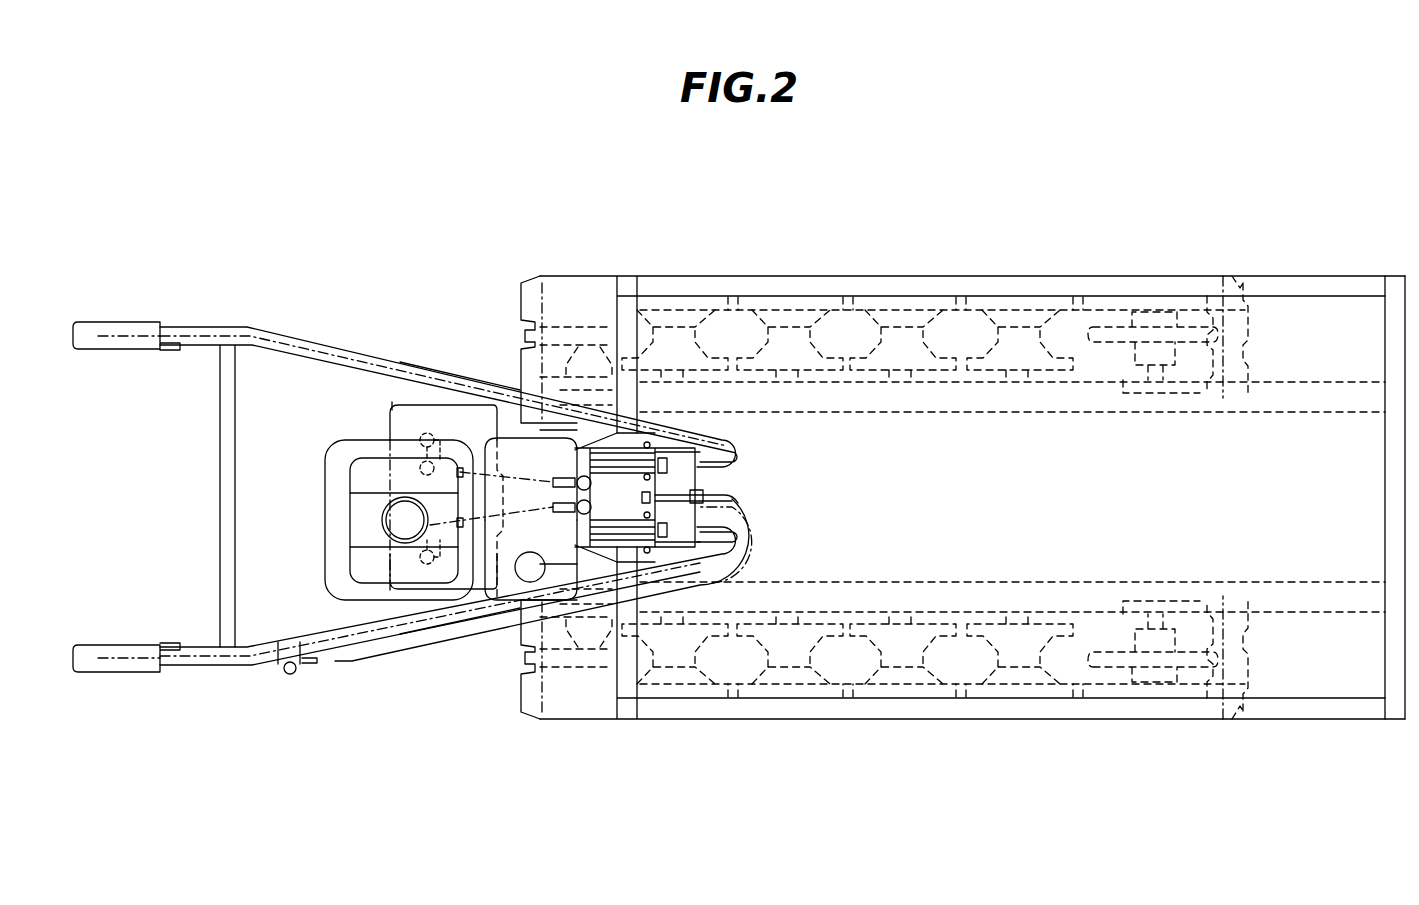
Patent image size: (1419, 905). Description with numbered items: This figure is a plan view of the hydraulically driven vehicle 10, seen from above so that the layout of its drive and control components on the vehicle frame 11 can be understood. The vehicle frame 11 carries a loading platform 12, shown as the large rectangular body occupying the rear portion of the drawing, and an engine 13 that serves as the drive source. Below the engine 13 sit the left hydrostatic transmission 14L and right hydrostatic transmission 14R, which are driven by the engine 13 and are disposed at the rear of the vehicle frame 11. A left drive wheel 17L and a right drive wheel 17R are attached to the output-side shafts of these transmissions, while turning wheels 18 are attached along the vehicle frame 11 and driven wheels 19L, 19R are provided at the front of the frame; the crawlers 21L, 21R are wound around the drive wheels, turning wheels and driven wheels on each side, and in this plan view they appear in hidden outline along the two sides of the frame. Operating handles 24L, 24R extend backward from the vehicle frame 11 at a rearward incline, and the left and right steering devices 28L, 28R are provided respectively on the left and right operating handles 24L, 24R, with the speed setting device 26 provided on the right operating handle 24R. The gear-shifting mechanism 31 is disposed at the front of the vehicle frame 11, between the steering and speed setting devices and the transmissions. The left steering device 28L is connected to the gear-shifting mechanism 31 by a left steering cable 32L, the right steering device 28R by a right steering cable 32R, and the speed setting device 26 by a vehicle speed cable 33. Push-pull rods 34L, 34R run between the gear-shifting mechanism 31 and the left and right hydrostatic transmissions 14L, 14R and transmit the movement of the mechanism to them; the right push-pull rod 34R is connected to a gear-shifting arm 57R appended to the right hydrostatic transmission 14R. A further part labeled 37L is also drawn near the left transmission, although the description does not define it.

The hydraulically driven vehicle 10 is at (528, 180).
The vehicle frame 11 is at (727, 330).
The loading platform 12 is at (1320, 708).
The engine 13 is at (365, 448).
The left hydrostatic transmission 14L is at (433, 418).
The right hydrostatic transmission 14R is at (438, 591).
The left drive wheel 17L is at (568, 326).
The right drive wheel 17R is at (578, 660).
The turning wheels 18 is at (637, 326).
The left driven wheel 19L is at (1113, 327).
The right driven wheel 19R is at (1118, 667).
The left crawler 21L is at (1243, 283).
The right crawler 21R is at (1240, 713).
The left operating handle 24L is at (278, 330).
The right operating handle 24R is at (267, 664).
The speed setting device 26 is at (300, 678).
The left steering device 28L is at (135, 328).
The right steering device 28R is at (130, 667).
The gear-shifting mechanism 31 is at (660, 440).
The left steering cable 32L is at (462, 376).
The right steering cable 32R is at (468, 614).
The vehicle speed cable 33 is at (382, 663).
The left push-pull rod 34L is at (515, 418).
The right push-pull rod 34R is at (493, 601).
The left mounting bolt 37L is at (392, 402).
The gear-shifting arm 57R is at (427, 565).